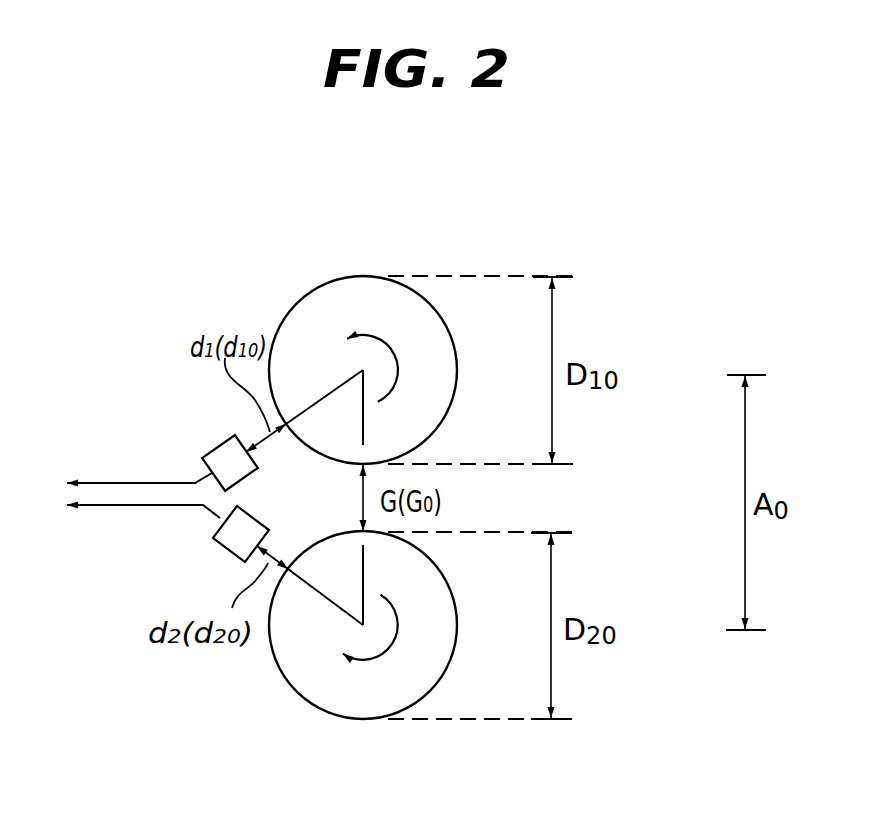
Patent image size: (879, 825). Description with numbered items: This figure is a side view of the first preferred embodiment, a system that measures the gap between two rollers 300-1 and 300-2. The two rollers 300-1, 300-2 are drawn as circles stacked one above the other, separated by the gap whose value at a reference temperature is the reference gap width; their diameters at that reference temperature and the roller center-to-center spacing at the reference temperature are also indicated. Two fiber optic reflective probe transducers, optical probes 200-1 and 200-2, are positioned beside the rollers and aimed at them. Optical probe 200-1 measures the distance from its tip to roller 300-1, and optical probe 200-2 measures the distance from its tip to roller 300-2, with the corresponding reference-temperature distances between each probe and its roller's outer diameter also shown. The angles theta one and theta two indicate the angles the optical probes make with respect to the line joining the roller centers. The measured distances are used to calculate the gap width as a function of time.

The roller 300-1 is at (365, 276).
The roller 300-2 is at (380, 720).
The optical probe 200-1 is at (217, 445).
The optical probe 200-2 is at (223, 547).